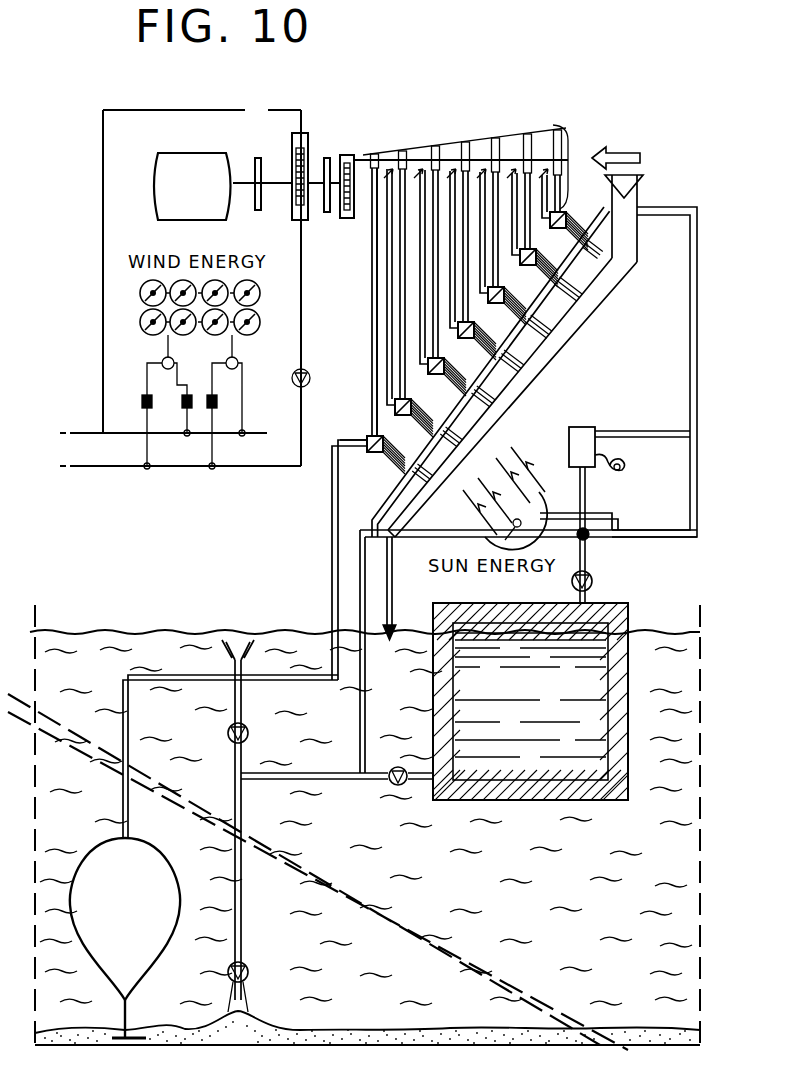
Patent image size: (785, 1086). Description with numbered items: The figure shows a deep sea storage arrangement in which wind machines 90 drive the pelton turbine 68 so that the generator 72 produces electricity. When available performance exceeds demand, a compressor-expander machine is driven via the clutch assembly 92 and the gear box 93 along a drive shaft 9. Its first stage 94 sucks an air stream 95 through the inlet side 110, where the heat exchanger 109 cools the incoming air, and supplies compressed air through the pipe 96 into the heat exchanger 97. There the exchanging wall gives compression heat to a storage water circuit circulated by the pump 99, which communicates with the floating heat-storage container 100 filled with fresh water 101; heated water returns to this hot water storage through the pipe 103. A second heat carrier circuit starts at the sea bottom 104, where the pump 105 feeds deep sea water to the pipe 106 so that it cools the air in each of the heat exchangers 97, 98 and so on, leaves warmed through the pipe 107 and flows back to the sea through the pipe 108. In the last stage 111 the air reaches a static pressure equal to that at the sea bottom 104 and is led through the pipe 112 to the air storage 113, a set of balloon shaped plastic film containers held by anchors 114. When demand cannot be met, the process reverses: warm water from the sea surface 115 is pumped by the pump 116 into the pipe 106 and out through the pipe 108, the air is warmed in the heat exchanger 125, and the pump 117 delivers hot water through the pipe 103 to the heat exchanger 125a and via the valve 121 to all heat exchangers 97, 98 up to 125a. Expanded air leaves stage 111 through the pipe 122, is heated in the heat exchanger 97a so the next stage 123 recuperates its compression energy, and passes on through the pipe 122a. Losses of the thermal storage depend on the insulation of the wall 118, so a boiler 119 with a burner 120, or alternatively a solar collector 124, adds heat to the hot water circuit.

The drive shaft 9 is at (365, 157).
The pelton turbine 68 is at (290, 215).
The generator 72 is at (205, 224).
The wind machines 90 is at (140, 318).
The clutch assembly 92 is at (327, 201).
The gear box 93 is at (354, 218).
The first stage 94 is at (552, 140).
The air stream 95 is at (620, 147).
The pipe 96 is at (568, 206).
The heat exchanger 97 is at (553, 258).
The heat exchanger 97a is at (352, 302).
The heat exchanger 98 is at (522, 295).
The pump 99 is at (398, 785).
The floating heat-storage container 100 is at (468, 802).
The fresh water 101 is at (522, 152).
The pipe 103 is at (496, 333).
The sea bottom 104 is at (320, 1031).
The pump 105 is at (250, 974).
The pipe 106 is at (508, 410).
The pipe 107 is at (530, 368).
The pipe 108 is at (395, 618).
The heat exchanger 109 is at (640, 178).
The inlet side 110 is at (578, 160).
The last stage 111 is at (378, 158).
The pipe 112 is at (330, 574).
The air storage 113 is at (178, 905).
The anchors 114 is at (140, 1034).
The sea surface 115 is at (80, 630).
The pump 116 is at (254, 730).
The pump 117 is at (593, 581).
The wall 118 is at (547, 803).
The boiler 119 is at (568, 446).
The burner 120 is at (620, 472).
The valve 121 is at (588, 540).
The pipe 122 is at (386, 300).
The pipe 122a is at (419, 270).
The next stage 123 is at (407, 158).
The solar collector 124 is at (540, 512).
The heat exchanger 125 is at (368, 424).
The heat exchanger 125a is at (342, 429).